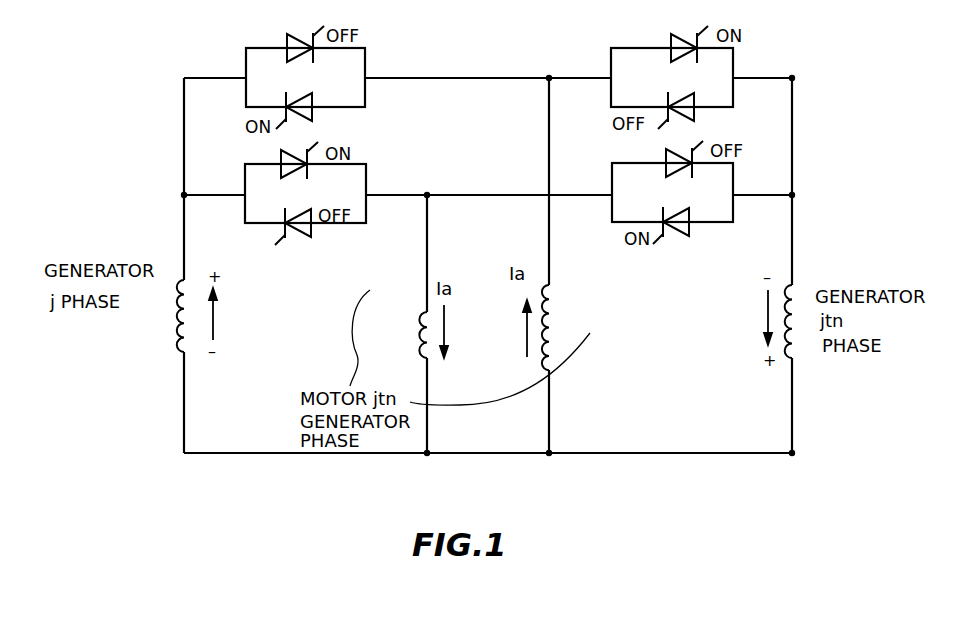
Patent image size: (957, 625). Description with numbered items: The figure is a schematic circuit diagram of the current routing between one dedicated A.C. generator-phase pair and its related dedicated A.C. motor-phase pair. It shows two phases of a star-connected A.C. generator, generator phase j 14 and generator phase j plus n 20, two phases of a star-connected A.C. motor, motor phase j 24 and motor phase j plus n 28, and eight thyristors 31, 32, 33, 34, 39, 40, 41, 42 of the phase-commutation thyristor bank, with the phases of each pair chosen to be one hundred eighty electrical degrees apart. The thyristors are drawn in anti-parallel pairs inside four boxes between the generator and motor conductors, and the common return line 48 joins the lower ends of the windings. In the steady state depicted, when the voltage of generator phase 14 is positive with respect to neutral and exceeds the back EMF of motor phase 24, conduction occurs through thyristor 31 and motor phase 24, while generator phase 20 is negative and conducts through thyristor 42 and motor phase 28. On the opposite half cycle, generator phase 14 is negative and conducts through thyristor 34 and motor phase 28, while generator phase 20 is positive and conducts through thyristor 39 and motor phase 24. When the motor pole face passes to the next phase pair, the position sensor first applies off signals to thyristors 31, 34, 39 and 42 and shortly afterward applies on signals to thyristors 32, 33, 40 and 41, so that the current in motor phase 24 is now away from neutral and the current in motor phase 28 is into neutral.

The A.C. generator phase j 14 is at (176, 326).
The A.C. generator phase j + n 20 is at (787, 296).
The A.C. motor phase j 24 is at (419, 332).
The A.C. motor phase j + n 28 is at (542, 356).
The thyristor 31 is at (285, 174).
The thyristor 32 is at (293, 215).
The thyristor 33 is at (305, 34).
The thyristor 34 is at (304, 96).
The thyristor 39 is at (666, 216).
The thyristor 40 is at (671, 176).
The thyristor 41 is at (680, 95).
The thyristor 42 is at (684, 34).
The common return conductor 48 is at (629, 455).